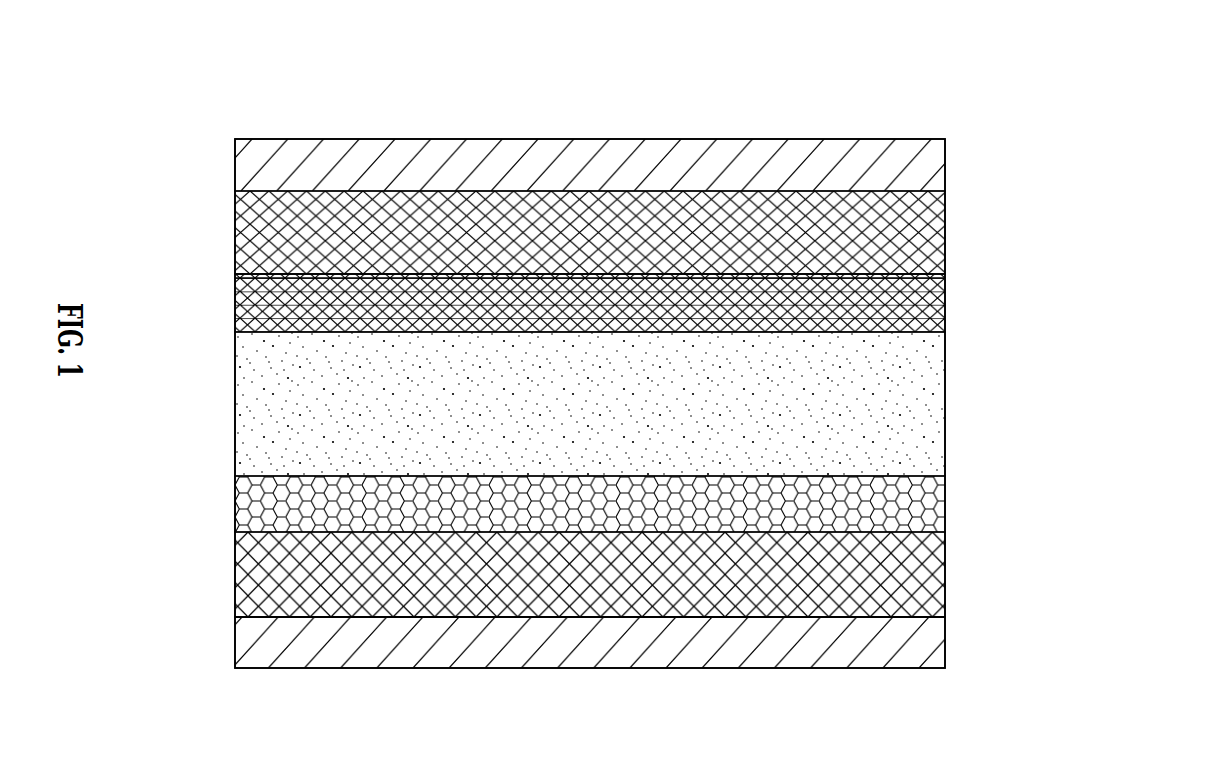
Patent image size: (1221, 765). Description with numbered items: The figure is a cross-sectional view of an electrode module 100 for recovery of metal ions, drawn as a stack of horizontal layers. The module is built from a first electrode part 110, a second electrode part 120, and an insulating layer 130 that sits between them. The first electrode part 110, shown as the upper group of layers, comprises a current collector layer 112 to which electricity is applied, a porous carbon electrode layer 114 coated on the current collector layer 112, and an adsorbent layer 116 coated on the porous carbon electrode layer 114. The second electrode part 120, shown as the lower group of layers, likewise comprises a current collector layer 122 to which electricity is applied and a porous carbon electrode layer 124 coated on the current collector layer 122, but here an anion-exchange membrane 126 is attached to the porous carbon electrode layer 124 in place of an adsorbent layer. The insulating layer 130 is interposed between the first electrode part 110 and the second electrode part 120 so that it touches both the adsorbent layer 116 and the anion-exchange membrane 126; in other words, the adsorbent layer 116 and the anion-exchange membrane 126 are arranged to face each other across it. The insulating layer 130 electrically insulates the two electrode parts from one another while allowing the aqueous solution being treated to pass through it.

The electrode module 100 is at (669, 338).
The first electrode part 110 is at (722, 234).
The current collector layer 112 is at (947, 172).
The porous carbon electrode layer 114 is at (947, 240).
The adsorbent layer 116 is at (947, 312).
The second electrode part 120 is at (722, 572).
The current collector layer 122 is at (947, 648).
The porous carbon electrode layer 124 is at (947, 581).
The anion-exchange membrane 126 is at (947, 512).
The insulating layer 130 is at (267, 376).